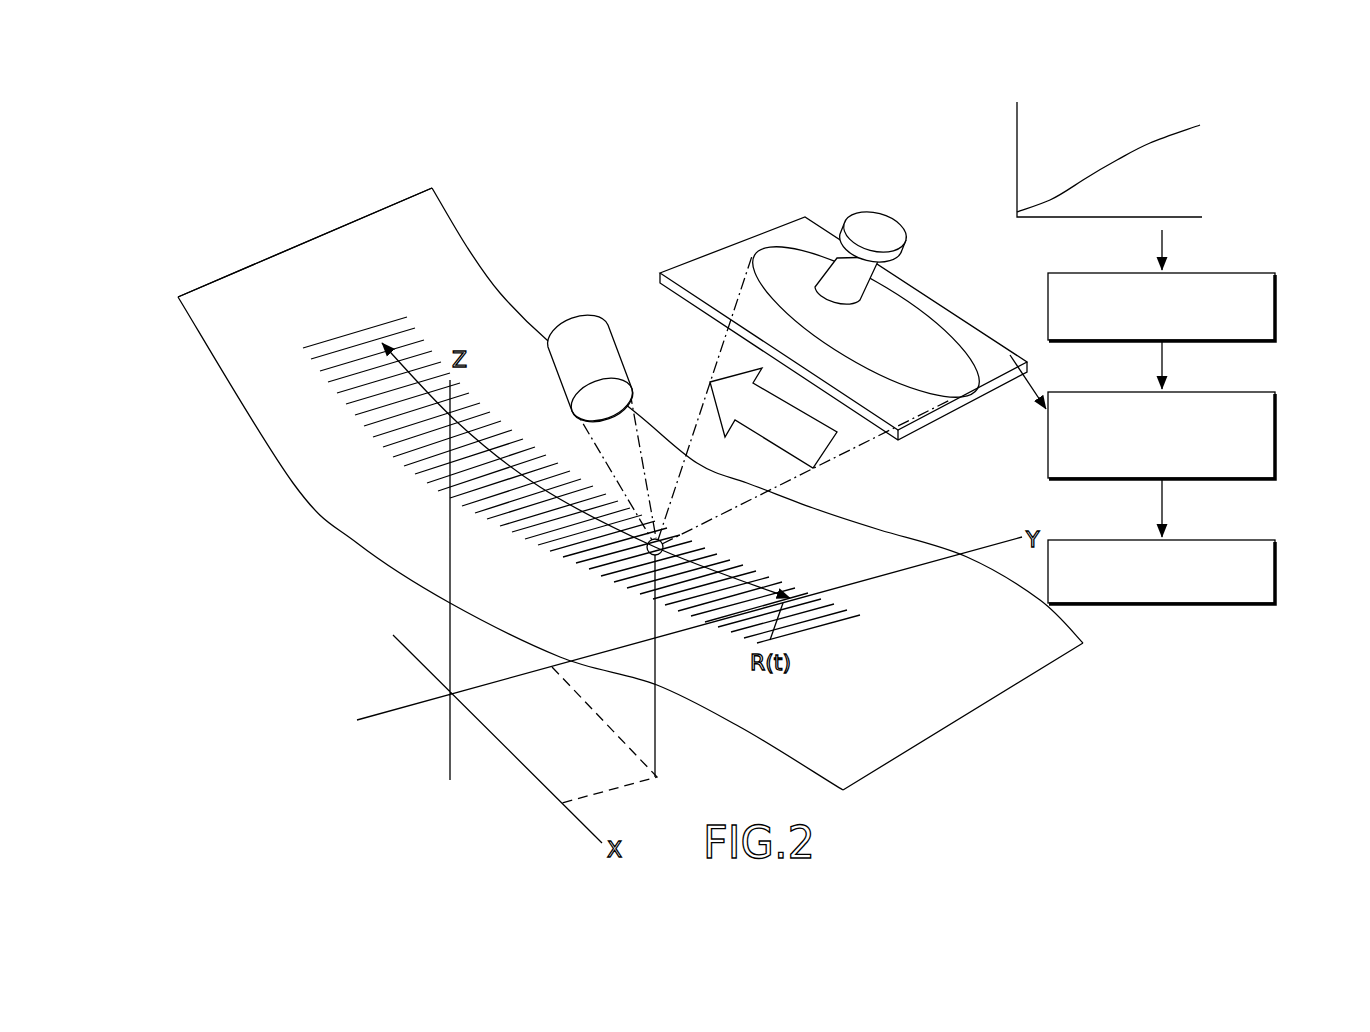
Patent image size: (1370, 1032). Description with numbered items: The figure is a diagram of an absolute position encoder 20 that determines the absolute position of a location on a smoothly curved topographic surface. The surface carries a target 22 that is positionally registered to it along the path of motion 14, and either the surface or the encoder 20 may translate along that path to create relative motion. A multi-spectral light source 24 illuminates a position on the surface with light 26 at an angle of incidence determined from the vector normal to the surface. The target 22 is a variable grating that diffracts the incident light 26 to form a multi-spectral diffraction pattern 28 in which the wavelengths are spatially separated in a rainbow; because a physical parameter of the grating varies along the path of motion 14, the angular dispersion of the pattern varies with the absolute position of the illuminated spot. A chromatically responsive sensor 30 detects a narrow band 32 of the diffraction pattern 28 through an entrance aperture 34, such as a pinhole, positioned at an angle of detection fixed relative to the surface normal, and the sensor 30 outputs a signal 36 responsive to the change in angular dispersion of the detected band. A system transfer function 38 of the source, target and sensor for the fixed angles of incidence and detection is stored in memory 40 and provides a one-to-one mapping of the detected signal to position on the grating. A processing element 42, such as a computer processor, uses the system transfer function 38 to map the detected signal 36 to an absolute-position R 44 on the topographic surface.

The path of motion 14 is at (903, 677).
The absolute position encoder 20 is at (176, 296).
The target 22 is at (397, 443).
The multi-spectral light source 24 is at (548, 343).
The light 26 is at (603, 466).
The multi-spectral diffraction pattern 28 is at (703, 437).
The chromatically responsive sensor 30 is at (867, 203).
The narrow band 32 is at (840, 253).
The entrance aperture 34 is at (812, 280).
The signal 36 is at (925, 294).
The system transfer function 38 is at (1232, 172).
The memory 40 is at (1277, 305).
The processing element 42 is at (1277, 435).
The absolute-position R 44 is at (1277, 582).